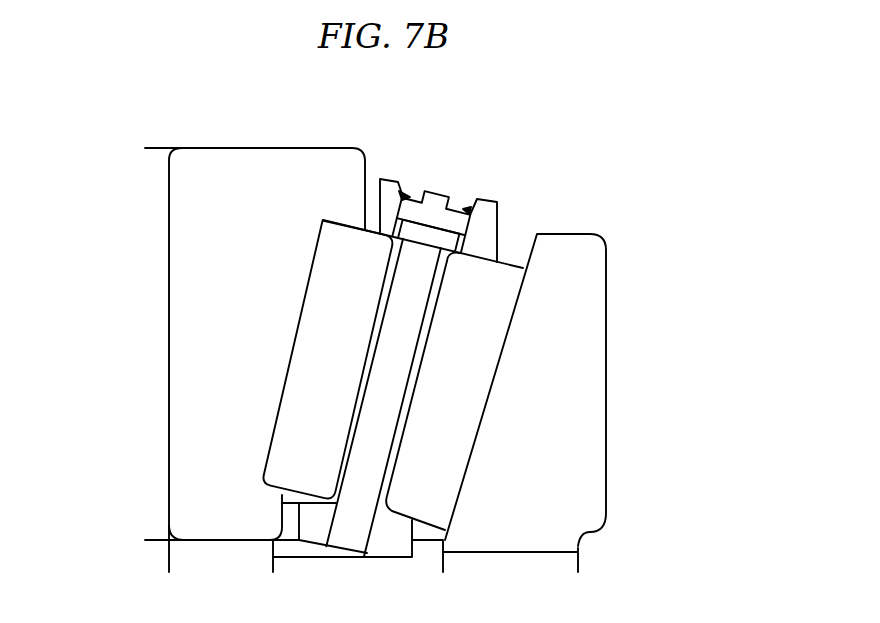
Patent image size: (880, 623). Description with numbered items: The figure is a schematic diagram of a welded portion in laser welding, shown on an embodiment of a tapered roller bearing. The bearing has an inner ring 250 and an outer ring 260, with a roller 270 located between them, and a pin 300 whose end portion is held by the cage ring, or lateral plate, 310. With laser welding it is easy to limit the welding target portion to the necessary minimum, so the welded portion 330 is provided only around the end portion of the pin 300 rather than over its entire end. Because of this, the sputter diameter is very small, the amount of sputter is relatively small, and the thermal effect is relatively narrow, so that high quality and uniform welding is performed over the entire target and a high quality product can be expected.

The inner ring 250 is at (168, 333).
The outer ring 260 is at (605, 373).
The roller 270 is at (308, 277).
The pin 300 is at (443, 212).
The cage ring (lateral plate) 310 is at (491, 232).
The welded portion 330 is at (403, 192).